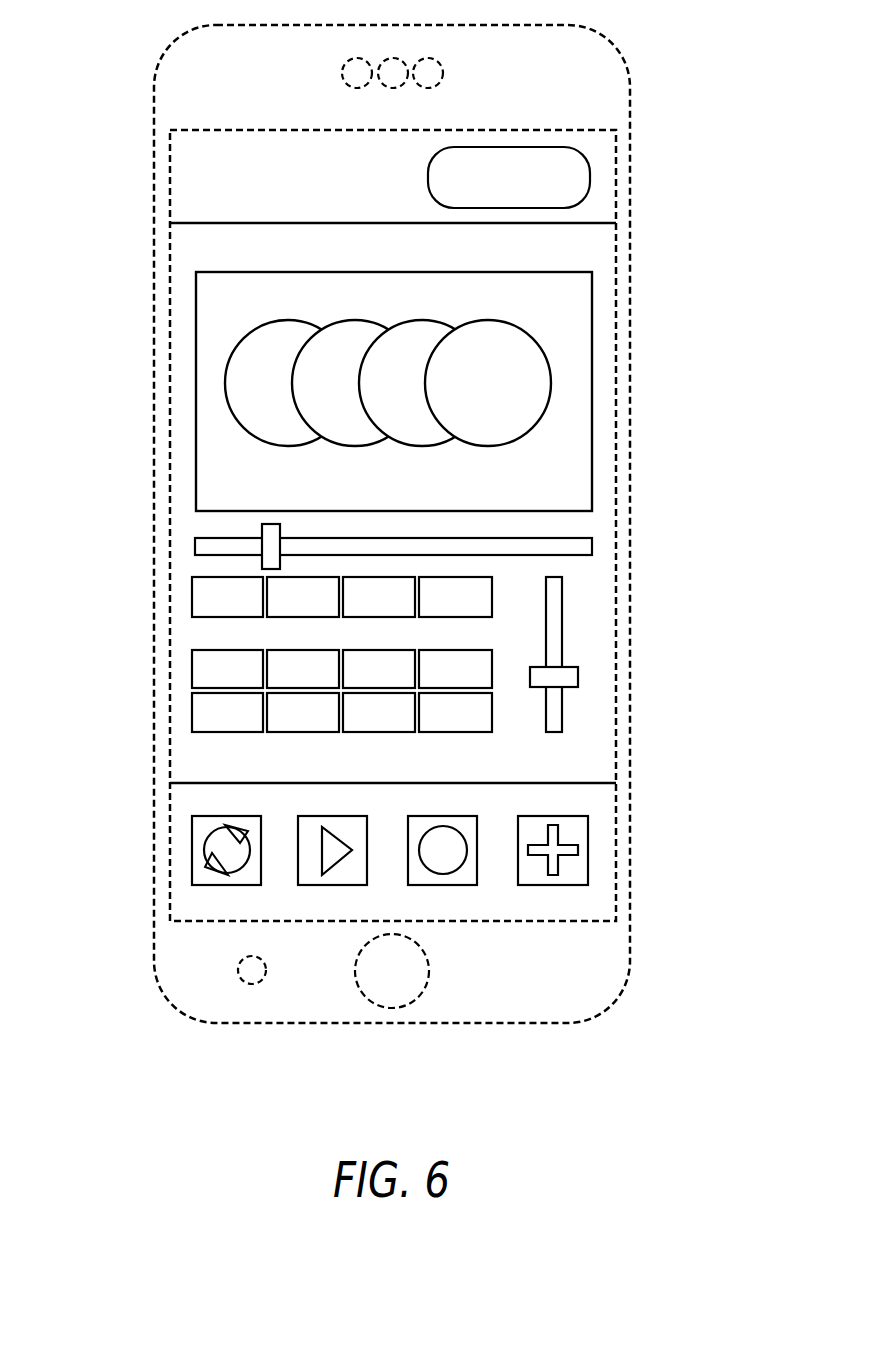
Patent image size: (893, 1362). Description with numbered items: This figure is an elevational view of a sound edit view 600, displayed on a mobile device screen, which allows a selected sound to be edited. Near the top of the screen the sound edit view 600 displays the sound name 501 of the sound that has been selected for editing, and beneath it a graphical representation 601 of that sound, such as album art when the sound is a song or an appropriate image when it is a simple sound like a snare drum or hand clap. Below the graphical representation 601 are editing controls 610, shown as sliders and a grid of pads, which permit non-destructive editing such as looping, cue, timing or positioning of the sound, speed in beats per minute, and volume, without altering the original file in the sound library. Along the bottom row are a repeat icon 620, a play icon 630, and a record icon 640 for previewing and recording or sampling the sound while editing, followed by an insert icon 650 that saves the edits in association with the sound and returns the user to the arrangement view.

The sound edit view 600 is at (168, 425).
The sound name 501 is at (493, 258).
The graphical representation 601 is at (592, 380).
The editing controls 610 is at (188, 537).
The repeat icon 620 is at (227, 886).
The play icon 630 is at (340, 886).
The record icon 640 is at (455, 886).
The insert icon 650 is at (588, 853).